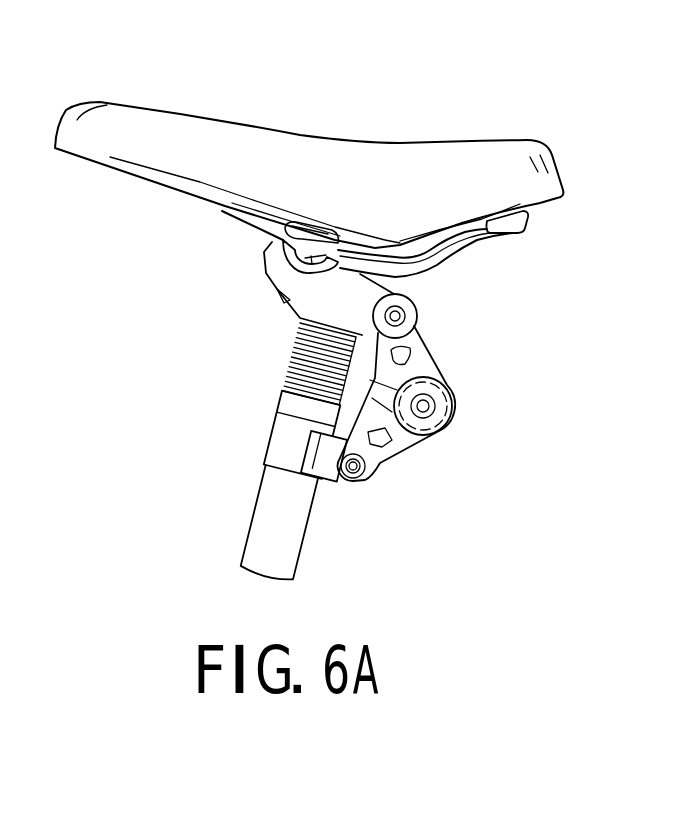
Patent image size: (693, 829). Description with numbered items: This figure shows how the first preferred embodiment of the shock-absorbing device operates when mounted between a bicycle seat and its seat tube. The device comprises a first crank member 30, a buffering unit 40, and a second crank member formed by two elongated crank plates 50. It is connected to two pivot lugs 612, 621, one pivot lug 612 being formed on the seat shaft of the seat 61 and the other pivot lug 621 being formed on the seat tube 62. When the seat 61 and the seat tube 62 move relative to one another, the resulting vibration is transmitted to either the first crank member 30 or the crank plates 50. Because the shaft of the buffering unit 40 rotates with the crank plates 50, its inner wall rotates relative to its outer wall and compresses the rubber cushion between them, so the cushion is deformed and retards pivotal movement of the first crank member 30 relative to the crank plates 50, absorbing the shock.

The seat 61 is at (370, 160).
The pivot lug 612 is at (385, 287).
The seat tube 62 is at (293, 530).
The pivot lug 621 is at (315, 462).
The first crank member 30 is at (450, 334).
The buffering unit 40 is at (463, 373).
The crank plates 50 is at (411, 480).